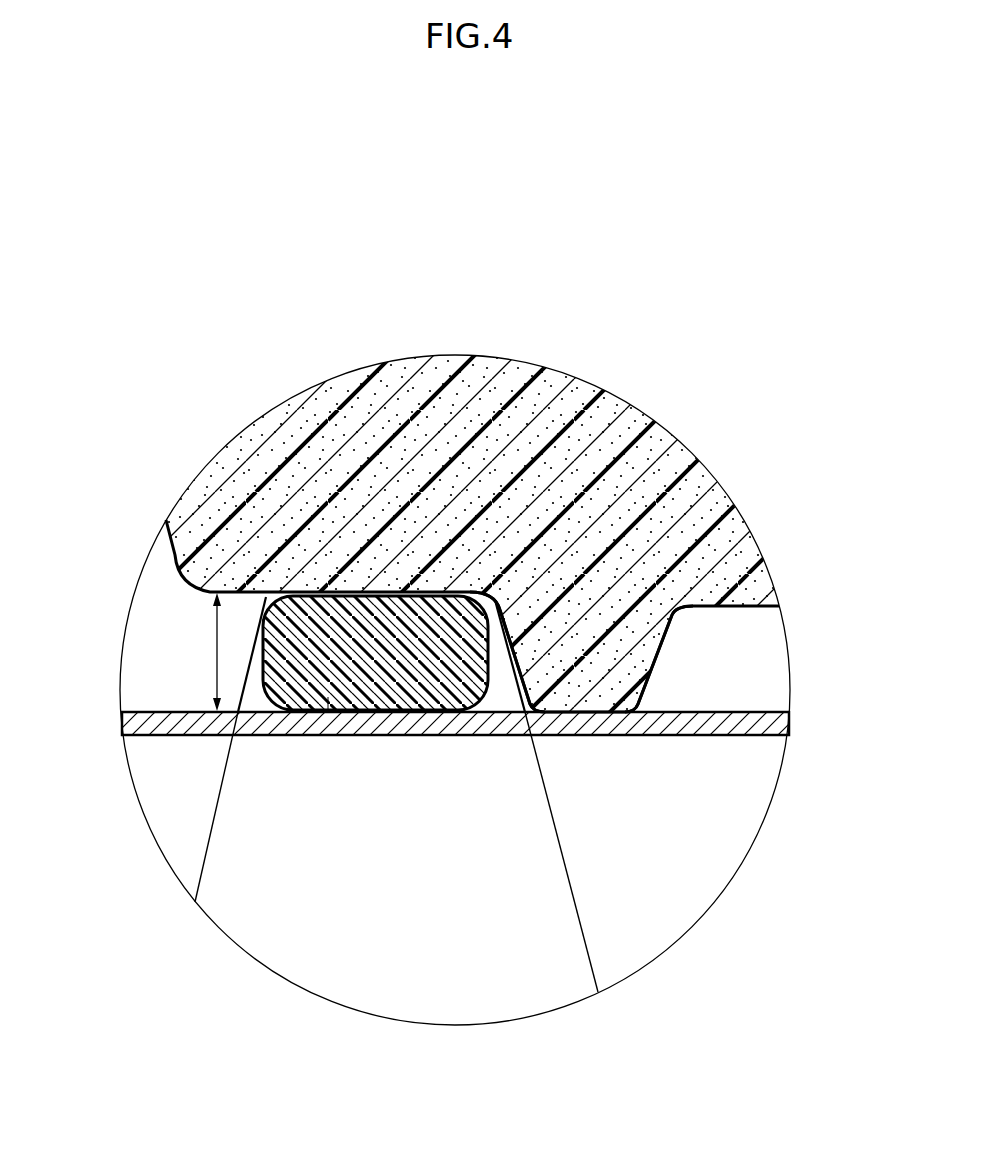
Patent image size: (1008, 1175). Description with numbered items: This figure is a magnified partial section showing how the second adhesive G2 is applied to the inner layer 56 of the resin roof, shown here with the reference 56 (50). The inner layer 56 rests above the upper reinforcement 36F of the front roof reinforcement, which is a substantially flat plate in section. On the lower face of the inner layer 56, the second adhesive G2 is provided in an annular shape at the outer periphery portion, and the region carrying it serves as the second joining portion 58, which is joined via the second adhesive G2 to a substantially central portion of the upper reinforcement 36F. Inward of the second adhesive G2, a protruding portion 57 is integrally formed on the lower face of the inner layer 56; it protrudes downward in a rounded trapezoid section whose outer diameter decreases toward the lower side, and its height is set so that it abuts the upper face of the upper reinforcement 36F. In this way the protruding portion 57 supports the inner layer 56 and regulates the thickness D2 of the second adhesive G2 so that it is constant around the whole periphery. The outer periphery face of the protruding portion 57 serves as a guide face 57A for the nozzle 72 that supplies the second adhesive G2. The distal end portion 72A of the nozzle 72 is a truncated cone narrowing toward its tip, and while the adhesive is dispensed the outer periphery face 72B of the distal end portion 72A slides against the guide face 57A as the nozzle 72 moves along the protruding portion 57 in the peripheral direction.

The inner layer 56 is at (696, 488).
The housing 50 is at (529, 533).
The protruding portion 57 is at (653, 664).
The guide face 57A is at (500, 650).
The second joining portion 58 is at (358, 597).
The upper reinforcement 36F is at (190, 736).
The second adhesive G2 is at (328, 697).
The thickness of the second adhesive D2 is at (214, 661).
The nozzle 72 is at (401, 797).
The distal end portion 72A is at (240, 788).
The outer periphery face 72B is at (563, 847).